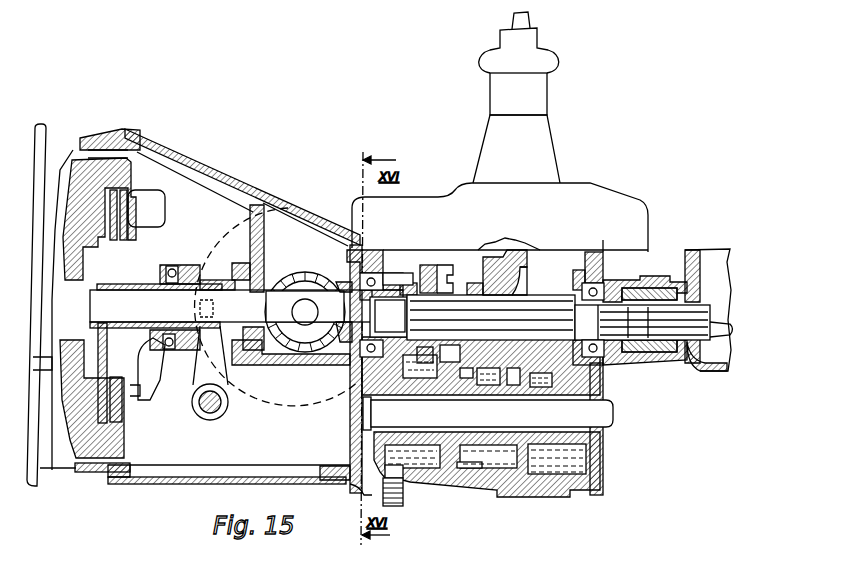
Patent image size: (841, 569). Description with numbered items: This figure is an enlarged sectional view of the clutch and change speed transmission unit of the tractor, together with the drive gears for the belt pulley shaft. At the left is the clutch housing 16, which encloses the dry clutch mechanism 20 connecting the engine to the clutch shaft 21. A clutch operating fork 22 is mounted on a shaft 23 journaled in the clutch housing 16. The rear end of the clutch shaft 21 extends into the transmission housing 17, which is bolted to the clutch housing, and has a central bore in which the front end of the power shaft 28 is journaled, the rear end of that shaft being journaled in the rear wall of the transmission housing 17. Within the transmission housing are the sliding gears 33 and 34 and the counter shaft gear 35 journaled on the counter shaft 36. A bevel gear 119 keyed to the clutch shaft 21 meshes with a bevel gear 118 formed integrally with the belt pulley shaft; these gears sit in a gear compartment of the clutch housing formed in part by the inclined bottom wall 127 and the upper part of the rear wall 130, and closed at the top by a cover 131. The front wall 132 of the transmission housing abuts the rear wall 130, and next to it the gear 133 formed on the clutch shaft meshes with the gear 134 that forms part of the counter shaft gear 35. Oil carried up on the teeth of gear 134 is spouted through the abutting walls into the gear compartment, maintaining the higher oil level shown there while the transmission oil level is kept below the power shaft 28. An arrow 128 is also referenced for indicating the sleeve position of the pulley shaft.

The clutch housing 16 is at (99, 141).
The transmission housing 17 is at (596, 470).
The clutch mechanism 20 is at (167, 265).
The clutch shaft 21 is at (231, 304).
The clutch operating fork 22 is at (196, 381).
The shaft 23 is at (216, 412).
The power shaft 28 is at (545, 300).
The sliding gear 33 is at (432, 283).
The sliding gear 34 is at (513, 354).
The counter shaft gear 35 is at (483, 459).
The counter shaft 36 is at (612, 416).
The bevel gear 118 is at (296, 284).
The bevel gear 119 is at (340, 283).
The inclined bottom wall 127 is at (297, 362).
The arrow 128 is at (252, 232).
The rear wall 130 is at (350, 427).
The cover 131 is at (278, 220).
The front wall 132 is at (357, 484).
The gear 133 is at (401, 279).
The gear 134 is at (412, 480).